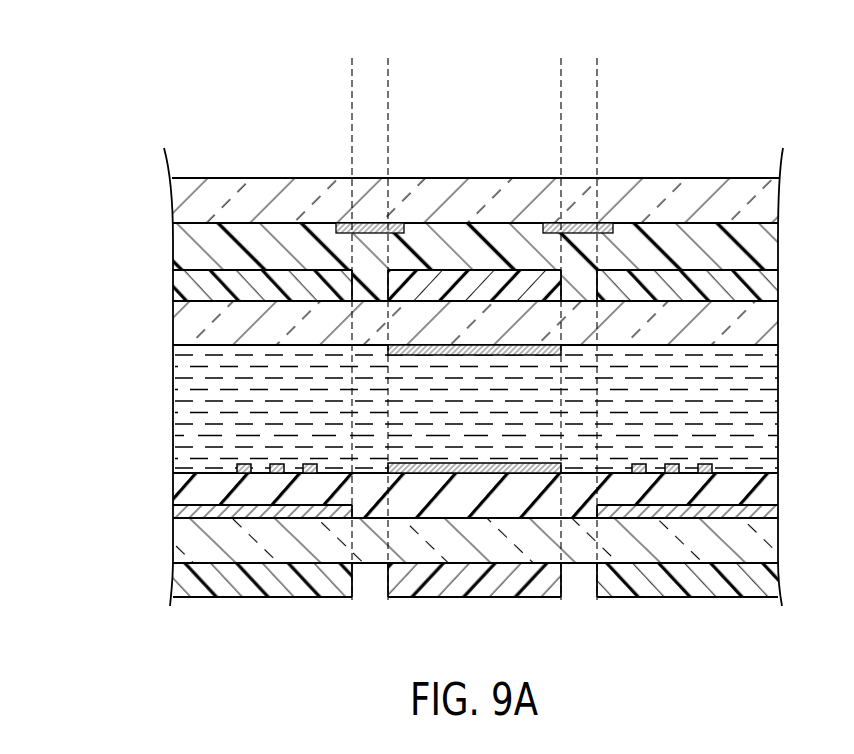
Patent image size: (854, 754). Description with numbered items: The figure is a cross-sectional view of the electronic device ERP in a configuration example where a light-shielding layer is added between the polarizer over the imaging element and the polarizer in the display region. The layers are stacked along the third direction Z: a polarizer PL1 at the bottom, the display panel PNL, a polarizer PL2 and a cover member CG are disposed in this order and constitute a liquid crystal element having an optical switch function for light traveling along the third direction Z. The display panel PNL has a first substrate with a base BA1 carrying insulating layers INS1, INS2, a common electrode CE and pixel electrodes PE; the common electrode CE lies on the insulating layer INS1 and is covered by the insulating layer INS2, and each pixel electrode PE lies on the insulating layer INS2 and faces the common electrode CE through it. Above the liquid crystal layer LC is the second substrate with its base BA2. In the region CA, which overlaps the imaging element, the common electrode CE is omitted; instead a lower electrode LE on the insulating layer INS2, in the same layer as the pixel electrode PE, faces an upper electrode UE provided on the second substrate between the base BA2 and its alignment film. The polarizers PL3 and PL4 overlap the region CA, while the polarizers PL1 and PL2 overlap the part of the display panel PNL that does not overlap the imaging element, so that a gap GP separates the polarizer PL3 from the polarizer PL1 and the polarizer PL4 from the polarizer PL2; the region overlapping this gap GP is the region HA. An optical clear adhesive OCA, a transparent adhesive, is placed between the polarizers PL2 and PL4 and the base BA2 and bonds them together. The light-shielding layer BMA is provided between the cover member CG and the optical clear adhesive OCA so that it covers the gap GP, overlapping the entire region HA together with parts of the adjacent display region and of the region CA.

The display panel PNL is at (406, 327).
The electronic device ERP is at (238, 128).
The region HA is at (442, 80).
The region CA is at (551, 125).
The light-shielding layer BMA is at (342, 223).
The cover member CG is at (180, 204).
The optical clear adhesive OCA is at (185, 243).
The polarizer PL2 is at (185, 286).
The polarizer PL4 is at (486, 274).
The gap GP is at (582, 266).
The base BA2 is at (185, 326).
The liquid crystal layer LC is at (185, 406).
The upper electrode UE is at (523, 358).
The lower electrode LE is at (426, 464).
The pixel electrode PE is at (243, 464).
The insulating layer INS1 is at (404, 492).
The insulating layer INS2 is at (178, 493).
The common electrode CE is at (183, 512).
The base BA1 is at (185, 545).
The polarizer PL1 is at (185, 582).
The polarizer PL3 is at (459, 599).
The third direction Z is at (52, 337).